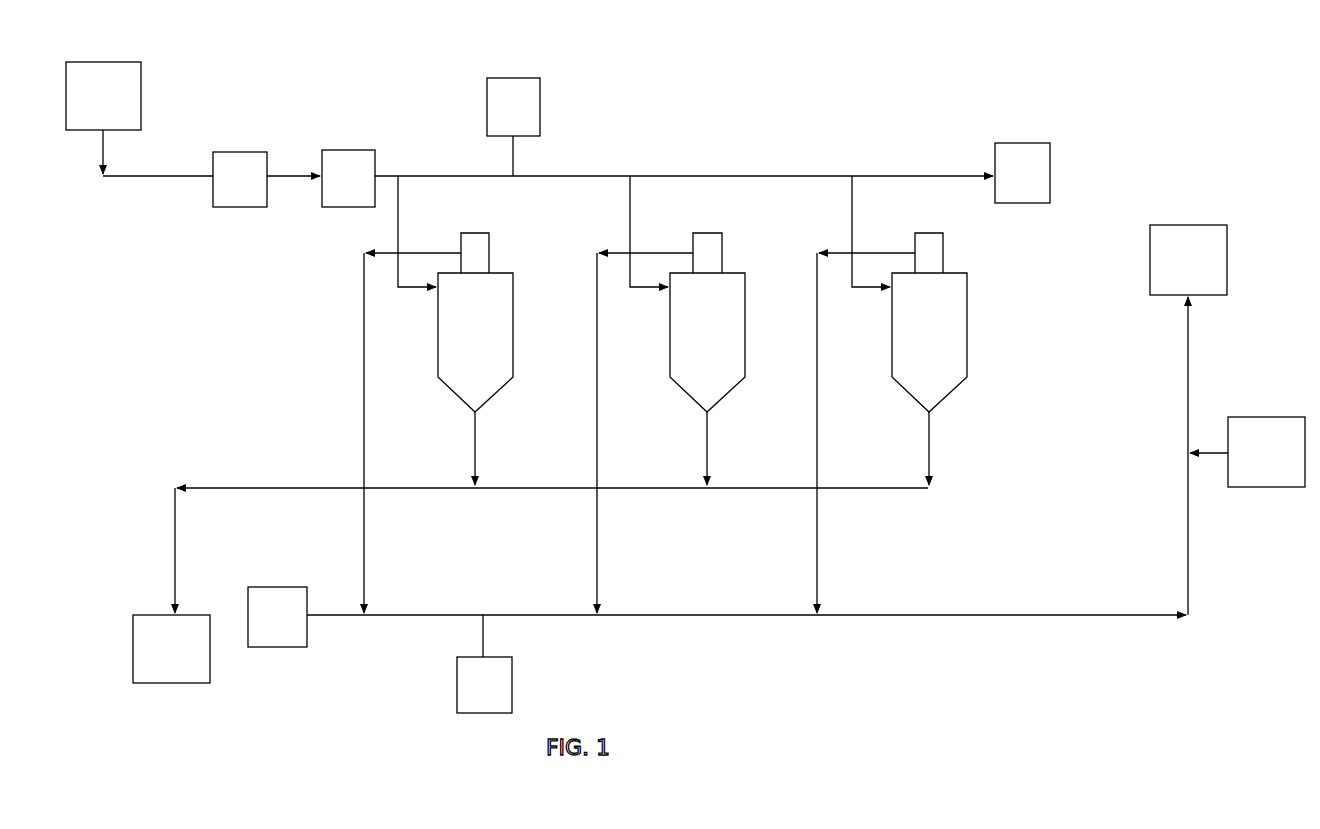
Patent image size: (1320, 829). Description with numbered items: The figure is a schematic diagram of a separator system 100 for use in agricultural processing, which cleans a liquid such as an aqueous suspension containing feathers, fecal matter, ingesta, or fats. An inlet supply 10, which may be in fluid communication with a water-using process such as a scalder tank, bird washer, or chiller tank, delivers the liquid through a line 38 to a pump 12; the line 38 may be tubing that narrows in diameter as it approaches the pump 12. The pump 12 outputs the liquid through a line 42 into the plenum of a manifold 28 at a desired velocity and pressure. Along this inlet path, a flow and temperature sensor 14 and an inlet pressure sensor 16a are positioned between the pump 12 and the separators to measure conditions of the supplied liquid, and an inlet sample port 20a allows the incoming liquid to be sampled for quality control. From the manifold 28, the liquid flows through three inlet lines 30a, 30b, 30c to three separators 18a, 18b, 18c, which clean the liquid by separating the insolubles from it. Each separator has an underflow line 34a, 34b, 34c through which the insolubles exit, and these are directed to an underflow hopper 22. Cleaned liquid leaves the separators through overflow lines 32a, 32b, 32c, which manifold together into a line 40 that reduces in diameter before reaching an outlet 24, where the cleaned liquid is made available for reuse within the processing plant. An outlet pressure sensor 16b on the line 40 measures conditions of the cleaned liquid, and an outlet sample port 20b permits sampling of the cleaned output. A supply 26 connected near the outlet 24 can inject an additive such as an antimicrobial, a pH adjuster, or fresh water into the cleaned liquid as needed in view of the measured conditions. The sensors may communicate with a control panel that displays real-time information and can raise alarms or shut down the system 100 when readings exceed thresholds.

The separator system 100 is at (963, 107).
The inlet supply 10 is at (89, 107).
The pump 12 is at (226, 190).
The flow and temperature sensor 14 is at (334, 189).
The inlet pressure sensor 16a is at (492, 118).
The outlet pressure sensor 16b is at (463, 696).
The separator 18a is at (454, 342).
The separator 18b is at (686, 342).
The separator 18c is at (908, 342).
The inlet sample port 20a is at (1001, 184).
The outlet sample port 20b is at (256, 628).
The underflow hopper 22 is at (157, 660).
The outlet 24 is at (1174, 271).
The supply 26 is at (1252, 463).
The manifold 28 is at (660, 141).
The inlet line 30a is at (397, 220).
The inlet line 30b is at (628, 208).
The inlet line 30c is at (850, 205).
The overflow line 32a is at (363, 415).
The overflow line 32b is at (595, 423).
The overflow line 32c is at (817, 433).
The underflow line 34a is at (473, 433).
The underflow line 34b is at (703, 433).
The underflow line 34c is at (927, 433).
The line 38 is at (127, 178).
The line 42 is at (283, 173).
The line 40 is at (692, 617).